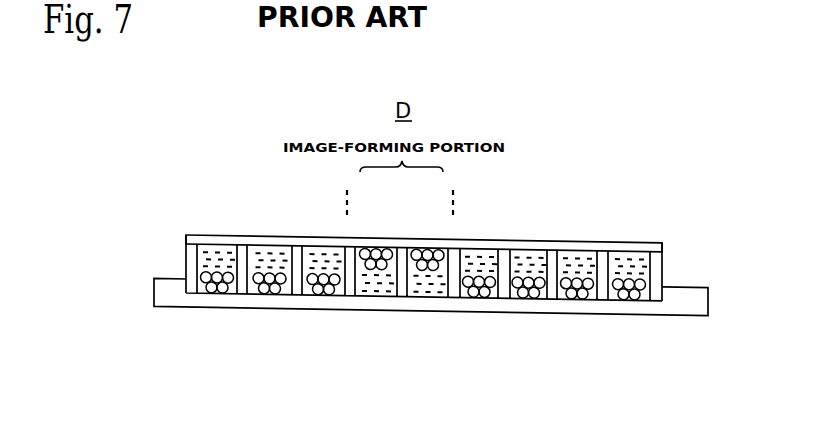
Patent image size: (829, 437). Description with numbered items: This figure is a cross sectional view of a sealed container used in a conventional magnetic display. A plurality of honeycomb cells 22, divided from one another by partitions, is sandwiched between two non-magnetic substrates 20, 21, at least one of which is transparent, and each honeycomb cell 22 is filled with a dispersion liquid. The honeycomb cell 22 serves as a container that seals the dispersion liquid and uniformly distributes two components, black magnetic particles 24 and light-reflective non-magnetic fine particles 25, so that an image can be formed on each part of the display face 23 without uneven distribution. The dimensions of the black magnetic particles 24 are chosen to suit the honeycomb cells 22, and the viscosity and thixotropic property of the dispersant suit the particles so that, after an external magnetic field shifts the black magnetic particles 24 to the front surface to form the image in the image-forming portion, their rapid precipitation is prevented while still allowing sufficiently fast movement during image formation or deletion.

The non-magnetic substrate 20 is at (613, 248).
The non-magnetic substrate 21 is at (615, 305).
The honeycomb cell 22 is at (643, 268).
The display face 23 is at (540, 241).
The black magnetic particle 24 is at (322, 288).
The light-reflective non-magnetic fine particle 25 is at (415, 293).